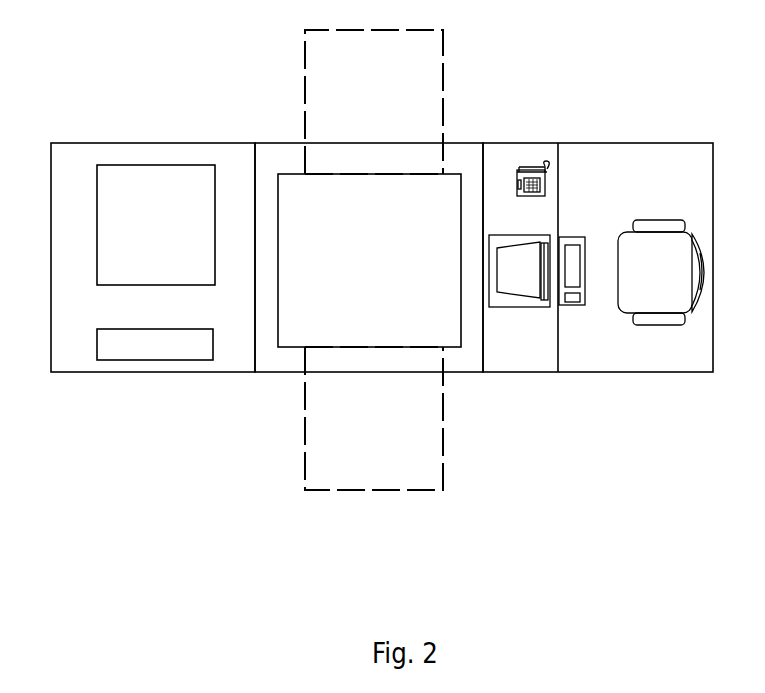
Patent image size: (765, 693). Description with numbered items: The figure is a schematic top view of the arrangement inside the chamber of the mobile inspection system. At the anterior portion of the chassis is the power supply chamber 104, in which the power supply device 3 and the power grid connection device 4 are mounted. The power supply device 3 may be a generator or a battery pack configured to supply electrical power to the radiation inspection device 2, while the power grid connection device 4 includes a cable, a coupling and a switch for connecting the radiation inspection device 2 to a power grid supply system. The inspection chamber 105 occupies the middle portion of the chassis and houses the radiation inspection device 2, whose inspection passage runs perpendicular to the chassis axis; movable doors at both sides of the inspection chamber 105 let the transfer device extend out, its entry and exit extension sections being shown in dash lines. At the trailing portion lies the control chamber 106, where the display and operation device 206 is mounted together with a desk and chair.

The radiation inspection device 2 is at (369, 260).
The power supply device 3 is at (156, 225).
The power grid connection device 4 is at (155, 343).
The power supply chamber 104 is at (105, 372).
The inspection chamber 105 is at (457, 375).
The control chamber 106 is at (617, 373).
The display and operation device 206 is at (537, 234).